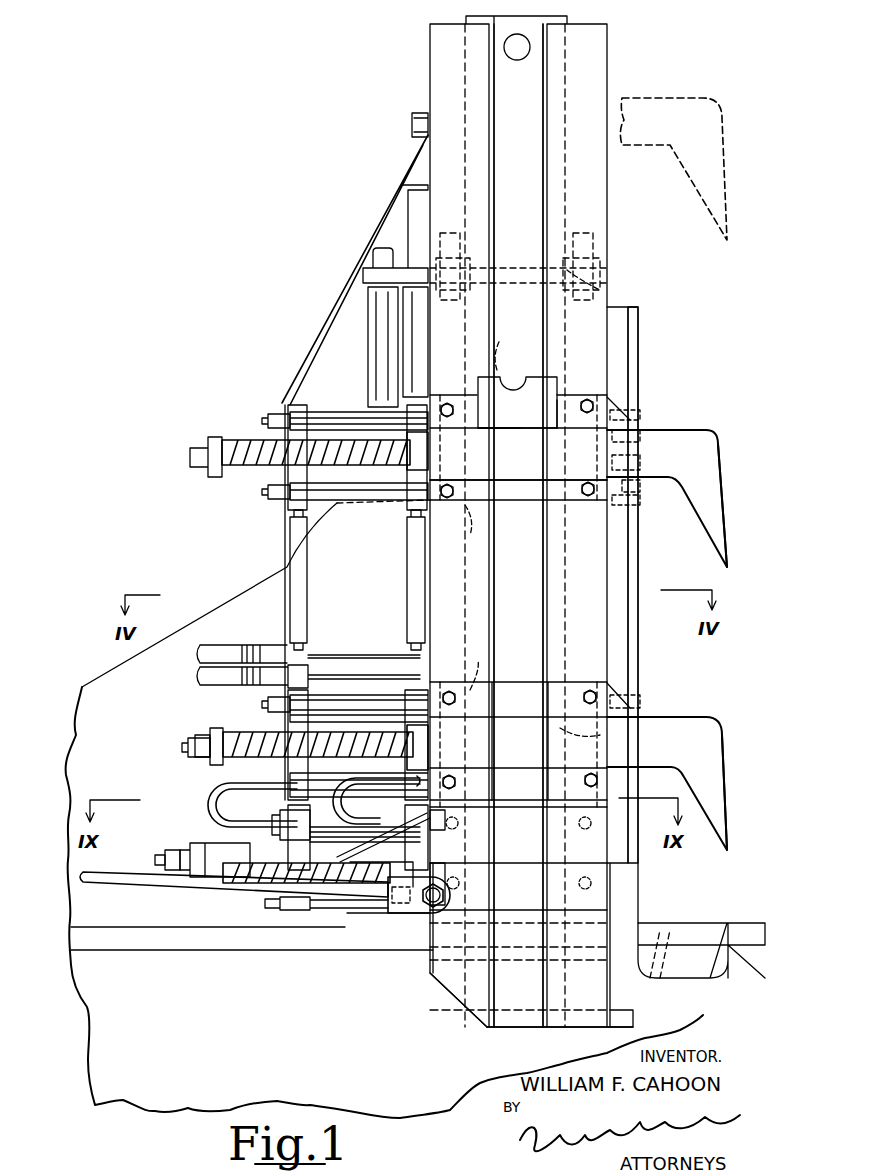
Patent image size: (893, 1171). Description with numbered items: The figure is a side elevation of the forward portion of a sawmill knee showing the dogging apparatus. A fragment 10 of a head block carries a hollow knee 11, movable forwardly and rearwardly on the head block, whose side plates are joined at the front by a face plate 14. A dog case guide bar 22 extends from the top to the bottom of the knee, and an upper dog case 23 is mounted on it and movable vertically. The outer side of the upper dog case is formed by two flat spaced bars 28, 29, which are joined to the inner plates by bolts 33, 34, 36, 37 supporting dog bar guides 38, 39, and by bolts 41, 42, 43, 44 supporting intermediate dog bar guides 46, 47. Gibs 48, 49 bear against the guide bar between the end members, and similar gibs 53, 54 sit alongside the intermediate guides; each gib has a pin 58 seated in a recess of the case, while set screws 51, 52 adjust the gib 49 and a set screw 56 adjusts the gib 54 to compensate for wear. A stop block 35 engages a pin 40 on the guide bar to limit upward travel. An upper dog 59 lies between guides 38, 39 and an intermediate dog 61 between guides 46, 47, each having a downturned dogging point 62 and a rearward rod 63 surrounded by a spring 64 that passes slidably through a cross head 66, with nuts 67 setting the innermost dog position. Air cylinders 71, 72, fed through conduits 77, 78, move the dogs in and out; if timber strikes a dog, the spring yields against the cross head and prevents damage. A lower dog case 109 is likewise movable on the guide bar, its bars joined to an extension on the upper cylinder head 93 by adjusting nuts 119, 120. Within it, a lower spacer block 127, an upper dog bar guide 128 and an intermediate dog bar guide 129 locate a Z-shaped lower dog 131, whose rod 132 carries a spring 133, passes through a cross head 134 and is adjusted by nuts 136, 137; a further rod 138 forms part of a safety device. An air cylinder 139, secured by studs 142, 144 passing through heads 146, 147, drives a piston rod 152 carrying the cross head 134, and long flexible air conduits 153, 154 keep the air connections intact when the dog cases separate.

The fragment of a head block 10 is at (110, 1030).
The hollow knee 11 is at (224, 600).
The face plate 14 is at (638, 383).
The dog case guide bar 22 is at (515, 97).
The upper dog case 23 is at (607, 68).
The flat spaced bar 28 is at (470, 570).
The flat spaced bar 29 is at (570, 592).
The bolt 33 is at (447, 403).
The bolt 34 is at (586, 399).
The stop block 35 is at (515, 378).
The bolt 36 is at (453, 489).
The bolt 37 is at (585, 496).
The dog bar guide 38 is at (510, 347).
The dog bar guide 39 is at (457, 527).
The pin 40 is at (520, 58).
The bolt 41 is at (449, 691).
The bolt 42 is at (590, 690).
The bolt 43 is at (456, 785).
The bolt 44 is at (588, 786).
The intermediate dog bar guide 46 is at (523, 690).
The intermediate dog bar guide 47 is at (530, 782).
The gib 48 is at (478, 428).
The gib 49 is at (542, 412).
The set screw 51 is at (632, 416).
The set screw 52 is at (625, 505).
The gib 53 is at (478, 663).
The gib 54 is at (560, 728).
The set screw 56 is at (632, 700).
The pin 58 is at (620, 466).
The upper dog 59 is at (712, 440).
The intermediate dog 61 is at (685, 725).
The downturned dogging point 62 is at (718, 535).
The rod 63 is at (190, 456).
The spring 64 is at (232, 468).
The cross head 66 is at (232, 432).
The nuts 67 is at (205, 735).
The air cylinder 71 is at (345, 435).
The air cylinder 72 is at (348, 725).
The conduit 77 is at (303, 622).
The conduit 78 is at (417, 600).
The upper cylinder head 93 is at (410, 268).
The lower dog case 109 is at (476, 982).
The adjusting nut 119 is at (470, 268).
The adjusting nut 120 is at (570, 287).
The lower spacer block 127 is at (540, 1030).
The upper dog bar guide 128 is at (540, 858).
The intermediate dog bar guide 129 is at (425, 945).
The lower dog 131 is at (688, 985).
The rod 132 is at (330, 870).
The spring 133 is at (365, 872).
The cross head 134 is at (205, 843).
The adjusting nut 136 is at (185, 850).
The adjusting nut 137 is at (178, 858).
The rod 138 is at (150, 882).
The air cylinder 139 is at (352, 840).
The stud 142 is at (280, 812).
The stud 144 is at (280, 912).
The head 146 is at (300, 907).
The head 147 is at (425, 863).
The piston rod 152 is at (280, 840).
The air conduit 153 is at (215, 800).
The air conduit 154 is at (350, 790).